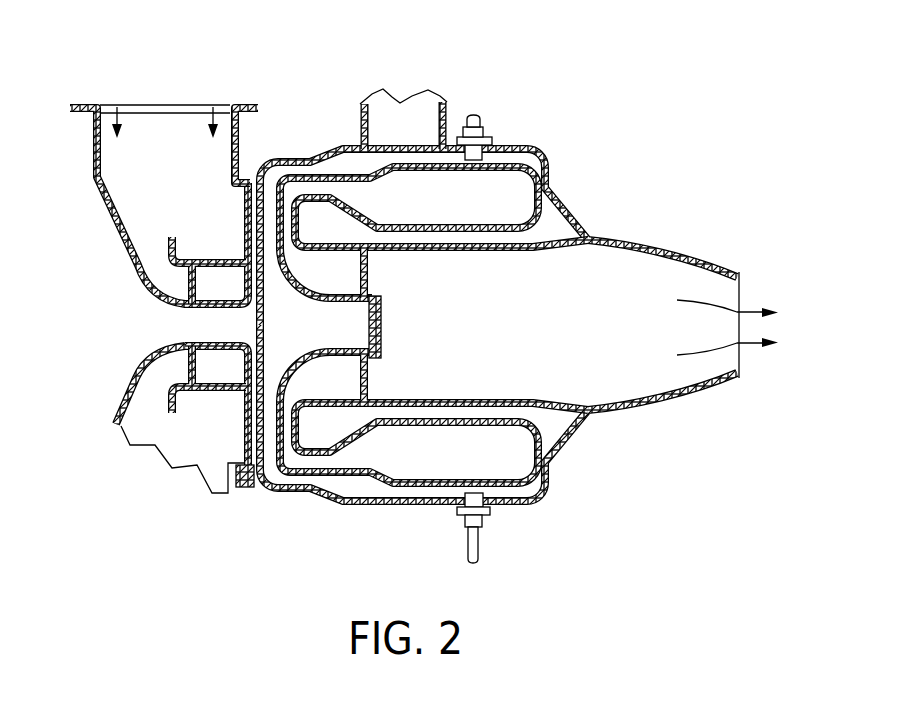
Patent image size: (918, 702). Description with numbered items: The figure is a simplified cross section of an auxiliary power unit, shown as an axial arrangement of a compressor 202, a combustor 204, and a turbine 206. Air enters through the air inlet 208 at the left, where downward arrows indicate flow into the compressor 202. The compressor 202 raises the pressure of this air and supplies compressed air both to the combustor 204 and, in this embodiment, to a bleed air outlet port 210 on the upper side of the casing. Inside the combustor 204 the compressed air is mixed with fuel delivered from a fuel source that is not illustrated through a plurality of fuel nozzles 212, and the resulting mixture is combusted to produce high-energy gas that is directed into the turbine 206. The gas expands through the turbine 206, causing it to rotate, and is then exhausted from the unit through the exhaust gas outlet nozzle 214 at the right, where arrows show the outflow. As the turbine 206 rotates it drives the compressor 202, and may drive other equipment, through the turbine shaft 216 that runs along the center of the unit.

The compressor 202 is at (221, 271).
The combustor 204 is at (523, 190).
The turbine 206 is at (365, 272).
The air inlet 208 is at (190, 147).
The bleed air outlet port 210 is at (400, 103).
The fuel nozzles 212 is at (490, 513).
The exhaust gas outlet nozzle 214 is at (700, 341).
The turbine shaft 216 is at (380, 318).